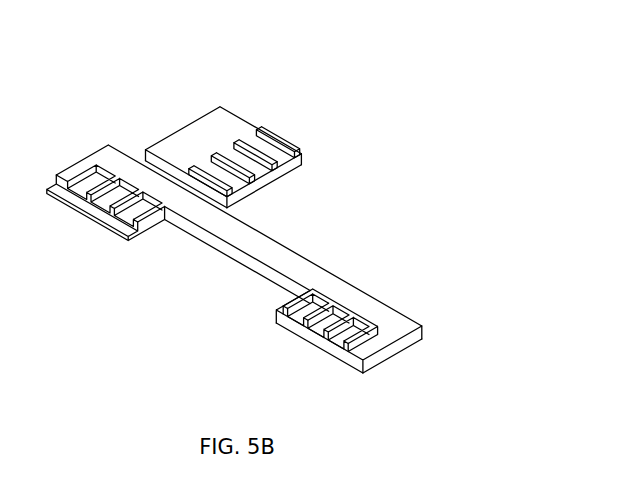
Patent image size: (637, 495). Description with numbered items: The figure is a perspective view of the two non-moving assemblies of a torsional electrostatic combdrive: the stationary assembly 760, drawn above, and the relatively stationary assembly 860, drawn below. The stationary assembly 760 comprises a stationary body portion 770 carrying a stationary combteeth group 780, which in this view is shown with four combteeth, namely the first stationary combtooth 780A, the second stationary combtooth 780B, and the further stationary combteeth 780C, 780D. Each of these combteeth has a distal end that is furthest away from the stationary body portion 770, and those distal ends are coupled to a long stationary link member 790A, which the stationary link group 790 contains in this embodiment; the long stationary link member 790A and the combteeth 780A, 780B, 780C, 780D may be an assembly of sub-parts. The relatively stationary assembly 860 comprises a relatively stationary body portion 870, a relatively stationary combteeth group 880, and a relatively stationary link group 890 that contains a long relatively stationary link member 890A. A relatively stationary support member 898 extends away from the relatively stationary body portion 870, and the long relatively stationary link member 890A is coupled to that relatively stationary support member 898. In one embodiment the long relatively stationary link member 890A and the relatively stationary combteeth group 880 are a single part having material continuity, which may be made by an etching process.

The stationary assembly 760 is at (152, 77).
The stationary body portion 770 is at (215, 127).
The stationary combteeth group 780 is at (298, 140).
The first stationary combtooth 780A is at (270, 128).
The second stationary combtooth 780B is at (255, 136).
The stationary combtooth 780C is at (228, 157).
The stationary combtooth 780D is at (207, 170).
The stationary link group 790 is at (277, 200).
The long stationary link member 790A is at (292, 178).
The relatively stationary assembly 860 is at (178, 294).
The relatively stationary body portion 870 is at (398, 300).
The relatively stationary combteeth group 880 is at (282, 300).
The relatively stationary link group 890 is at (296, 357).
The long relatively stationary link member 890A is at (329, 360).
The relatively stationary support member 898 is at (393, 360).